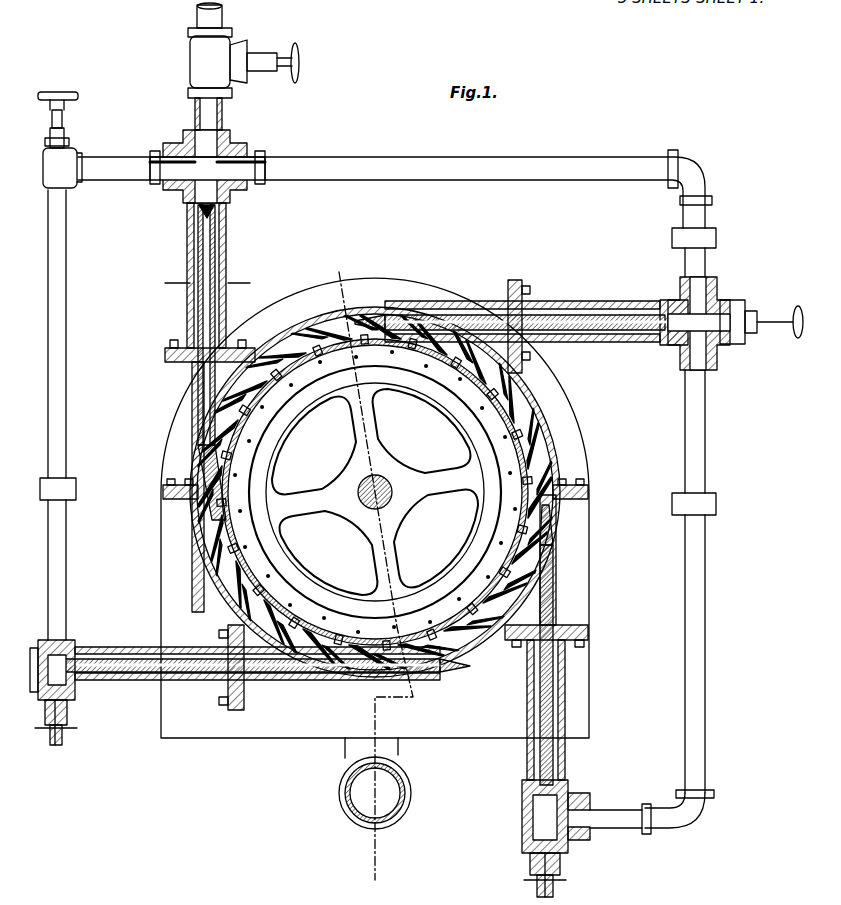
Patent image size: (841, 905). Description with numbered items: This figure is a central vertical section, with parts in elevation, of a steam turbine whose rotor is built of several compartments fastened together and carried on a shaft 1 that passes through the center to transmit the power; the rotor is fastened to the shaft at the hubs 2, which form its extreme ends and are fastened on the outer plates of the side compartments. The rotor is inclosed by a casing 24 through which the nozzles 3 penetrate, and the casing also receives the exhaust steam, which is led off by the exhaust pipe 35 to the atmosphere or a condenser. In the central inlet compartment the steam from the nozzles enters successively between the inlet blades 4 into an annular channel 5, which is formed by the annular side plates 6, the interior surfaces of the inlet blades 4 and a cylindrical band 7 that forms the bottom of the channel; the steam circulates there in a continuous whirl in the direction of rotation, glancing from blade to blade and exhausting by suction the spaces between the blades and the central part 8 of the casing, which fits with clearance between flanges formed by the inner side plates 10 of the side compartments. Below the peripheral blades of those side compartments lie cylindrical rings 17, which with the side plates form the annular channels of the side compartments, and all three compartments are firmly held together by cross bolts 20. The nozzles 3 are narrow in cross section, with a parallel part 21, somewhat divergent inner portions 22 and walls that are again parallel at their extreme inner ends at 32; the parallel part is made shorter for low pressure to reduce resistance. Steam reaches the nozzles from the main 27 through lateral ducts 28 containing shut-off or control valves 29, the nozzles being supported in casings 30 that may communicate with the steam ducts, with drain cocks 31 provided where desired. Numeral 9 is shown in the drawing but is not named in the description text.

The shaft 1 is at (375, 489).
The hubs 2 is at (369, 577).
The nozzles 3 is at (216, 232).
The inlet blades 4 is at (388, 312).
The annular channel 5 is at (312, 352).
The annular side plates 6 is at (383, 360).
The cylindrical band 7 is at (510, 488).
The central part of the casing 8 is at (532, 410).
The bucket pivots 9 is at (422, 340).
The inner side plates 10 is at (410, 482).
The cylindrical rings 17 is at (204, 311).
The cross bolts 20 is at (447, 388).
The parallel part of the nozzles 21 is at (198, 323).
The divergent inner portions 22 is at (193, 385).
The casing 24 is at (166, 558).
The main 27 is at (224, 22).
The lateral ducts 28 is at (138, 157).
The control valves 29 is at (193, 65).
The casings 30 is at (188, 239).
The drain cocks 31 is at (52, 733).
The parallel walls at inner ends of nozzles 32 is at (194, 450).
The exhaust pipe 35 is at (340, 812).